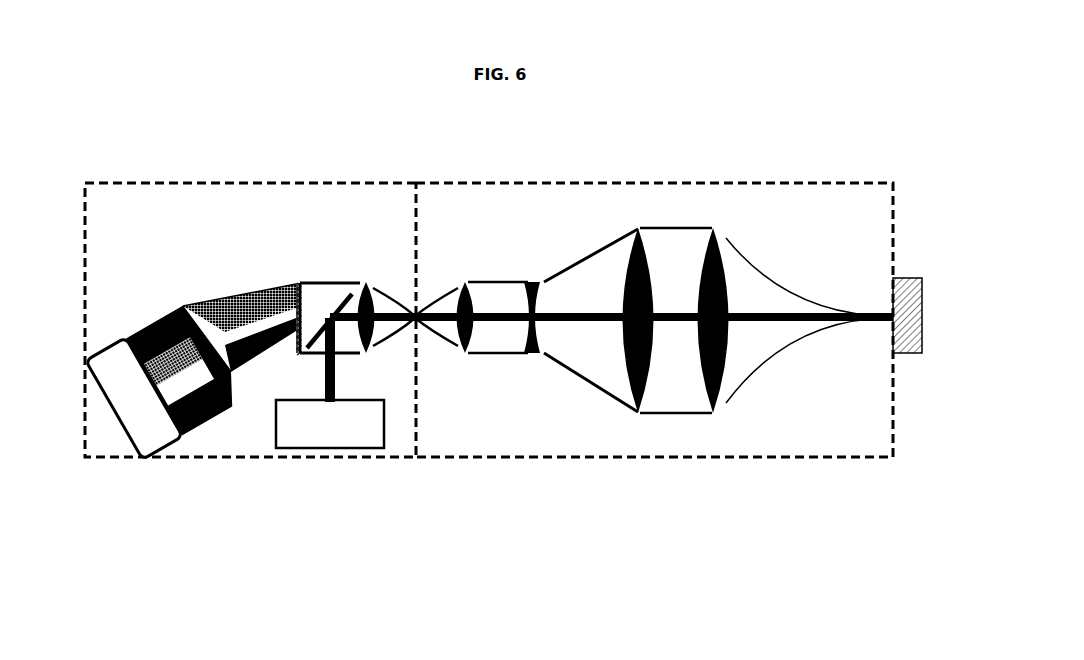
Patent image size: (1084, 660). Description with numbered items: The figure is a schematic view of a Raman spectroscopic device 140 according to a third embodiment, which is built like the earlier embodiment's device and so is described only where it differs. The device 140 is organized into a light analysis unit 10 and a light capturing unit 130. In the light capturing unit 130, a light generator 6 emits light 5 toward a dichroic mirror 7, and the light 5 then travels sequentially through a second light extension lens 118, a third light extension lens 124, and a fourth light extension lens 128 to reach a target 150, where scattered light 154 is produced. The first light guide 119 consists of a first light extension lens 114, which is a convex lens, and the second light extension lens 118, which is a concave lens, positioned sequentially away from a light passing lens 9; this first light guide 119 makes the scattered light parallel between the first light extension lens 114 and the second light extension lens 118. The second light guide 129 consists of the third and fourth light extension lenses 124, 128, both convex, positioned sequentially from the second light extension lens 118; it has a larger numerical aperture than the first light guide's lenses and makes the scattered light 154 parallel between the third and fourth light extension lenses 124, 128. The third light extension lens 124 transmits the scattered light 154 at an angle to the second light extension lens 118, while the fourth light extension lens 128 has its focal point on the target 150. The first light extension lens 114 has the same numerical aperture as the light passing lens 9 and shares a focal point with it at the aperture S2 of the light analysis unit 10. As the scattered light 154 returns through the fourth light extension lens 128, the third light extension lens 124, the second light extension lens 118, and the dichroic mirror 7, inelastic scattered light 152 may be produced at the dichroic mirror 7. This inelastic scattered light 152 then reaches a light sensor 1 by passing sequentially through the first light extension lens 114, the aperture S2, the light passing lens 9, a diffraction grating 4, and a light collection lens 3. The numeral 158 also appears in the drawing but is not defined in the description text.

The light sensor 1 is at (163, 442).
The light collection lens 3 is at (178, 305).
The diffraction grating 4 is at (297, 283).
The light 5 is at (325, 370).
The light generator 6 is at (336, 449).
The dichroic mirror 7 is at (345, 296).
The light passing lens 9 is at (381, 334).
The light analysis unit 10 is at (85, 428).
The first light extension lens 114 is at (478, 297).
The second light extension lens 118 is at (527, 337).
The first light guide 119 is at (419, 390).
The third light extension lens 124 is at (658, 256).
The fourth light extension lens 128 is at (712, 384).
The second light guide 129 is at (618, 387).
The light capturing unit 130 is at (790, 458).
The Raman spectroscopic device 140 is at (756, 633).
The target 150 is at (918, 335).
The inelastic scattered light 152 is at (311, 241).
The scattered light 154 is at (760, 272).
The emitted light flux 158 is at (228, 425).
The aperture S2 is at (417, 321).